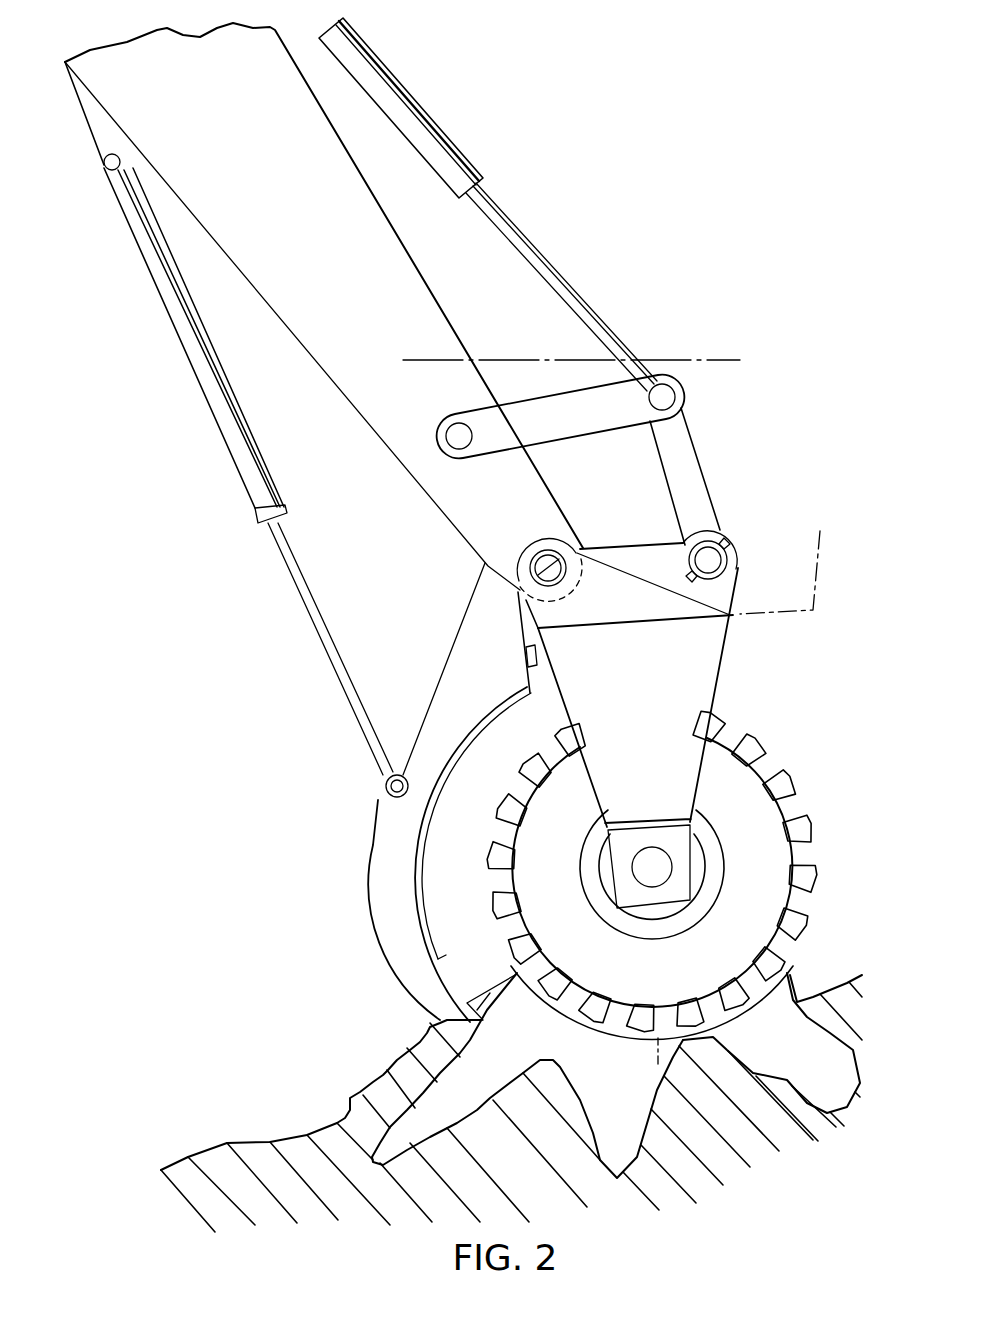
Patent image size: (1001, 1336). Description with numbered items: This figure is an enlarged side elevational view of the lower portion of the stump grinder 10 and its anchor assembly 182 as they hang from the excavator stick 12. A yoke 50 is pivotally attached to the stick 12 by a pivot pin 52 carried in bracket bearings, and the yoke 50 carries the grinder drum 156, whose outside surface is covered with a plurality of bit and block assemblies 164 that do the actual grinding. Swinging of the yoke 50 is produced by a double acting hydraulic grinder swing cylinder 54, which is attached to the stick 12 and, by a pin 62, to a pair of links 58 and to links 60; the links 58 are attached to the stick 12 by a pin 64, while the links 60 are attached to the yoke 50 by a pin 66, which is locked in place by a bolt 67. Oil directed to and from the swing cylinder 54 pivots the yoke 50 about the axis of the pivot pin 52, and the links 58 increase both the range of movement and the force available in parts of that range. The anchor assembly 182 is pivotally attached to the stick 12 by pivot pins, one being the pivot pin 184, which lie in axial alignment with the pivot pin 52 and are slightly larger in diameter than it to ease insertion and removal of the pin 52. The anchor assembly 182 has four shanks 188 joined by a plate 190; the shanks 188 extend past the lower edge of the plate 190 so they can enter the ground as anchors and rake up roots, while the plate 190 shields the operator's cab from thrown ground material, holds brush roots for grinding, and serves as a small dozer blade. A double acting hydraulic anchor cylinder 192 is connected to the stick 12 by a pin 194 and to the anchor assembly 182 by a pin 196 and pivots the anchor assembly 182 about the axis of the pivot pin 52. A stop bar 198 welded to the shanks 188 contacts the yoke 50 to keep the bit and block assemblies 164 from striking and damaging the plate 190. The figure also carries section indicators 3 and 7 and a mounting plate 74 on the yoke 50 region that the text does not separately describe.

The section line 3- 3 is at (784, 528).
The section line 7- 7 is at (407, 372).
The tree stump grinder 10 is at (642, 862).
The stick 12 is at (240, 163).
The yoke 50 is at (635, 623).
The pivot pin 52 is at (534, 547).
The hydraulic grinder swing cylinder 54 is at (440, 99).
The links 58 is at (590, 424).
The links 60 is at (690, 455).
The pin 62 is at (678, 390).
The pin 64 is at (462, 449).
The pin 66 is at (742, 563).
The bolt 67 is at (731, 529).
The mounting plate 74 is at (552, 545).
The grinder drum 156 is at (640, 981).
The bit and block assemblies 164 is at (483, 796).
The anchor assembly 182 is at (395, 854).
The pivot pin 184 is at (562, 596).
The shanks 188 is at (374, 855).
The plate 190 is at (428, 908).
The hydraulic anchor cylinder 192 is at (238, 466).
The pin 194 is at (104, 168).
The pin 196 is at (385, 794).
The stop bar 198 is at (538, 658).